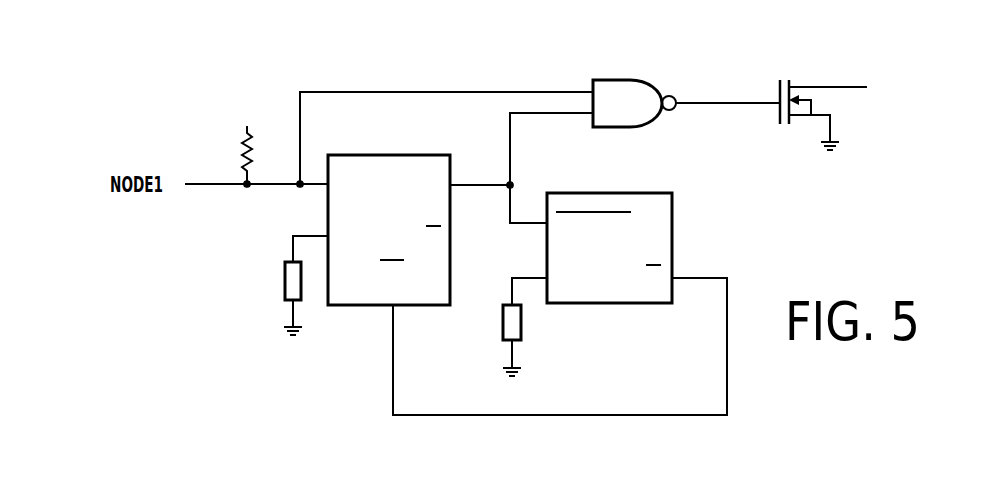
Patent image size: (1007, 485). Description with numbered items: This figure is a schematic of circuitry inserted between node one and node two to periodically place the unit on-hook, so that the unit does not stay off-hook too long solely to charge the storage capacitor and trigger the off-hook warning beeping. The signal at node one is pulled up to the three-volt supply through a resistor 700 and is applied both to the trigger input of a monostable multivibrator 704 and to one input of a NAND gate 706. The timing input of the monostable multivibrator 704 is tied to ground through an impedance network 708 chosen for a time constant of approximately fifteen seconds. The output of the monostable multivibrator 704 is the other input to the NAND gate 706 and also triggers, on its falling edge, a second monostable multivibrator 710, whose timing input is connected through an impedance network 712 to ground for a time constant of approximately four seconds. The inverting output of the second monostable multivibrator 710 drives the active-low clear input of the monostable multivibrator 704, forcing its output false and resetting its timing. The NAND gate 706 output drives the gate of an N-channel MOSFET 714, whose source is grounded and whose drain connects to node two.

The resistor 700 is at (242, 162).
The monostable multivibrator 704 is at (423, 153).
The NAND gate 706 is at (627, 78).
The impedance network 708 is at (285, 302).
The second monostable multivibrator 710 is at (673, 236).
The impedance network 712 is at (522, 322).
The N-channel MOSFET 714 is at (813, 86).